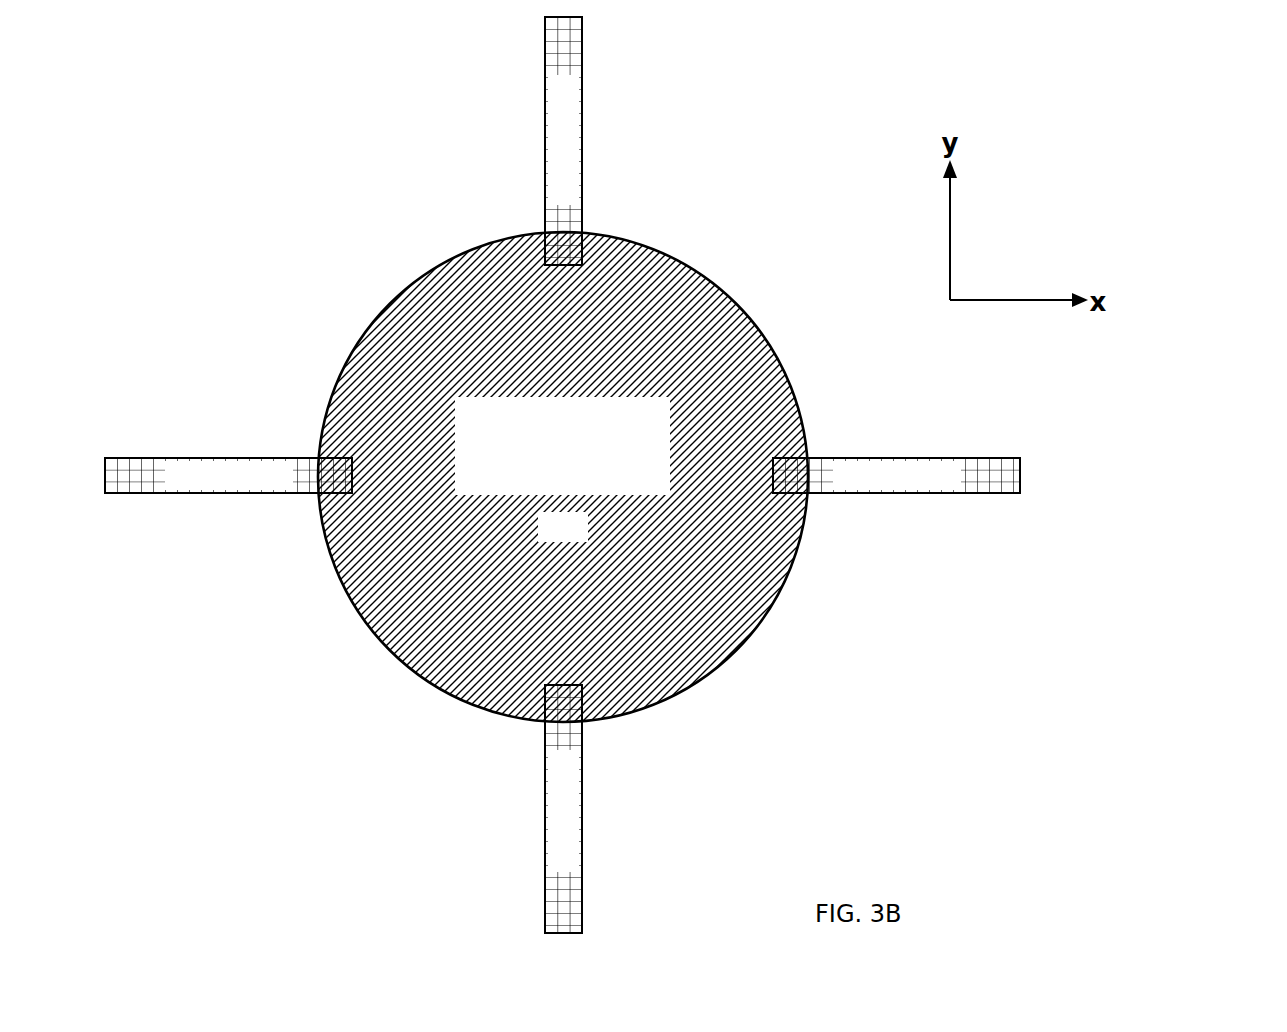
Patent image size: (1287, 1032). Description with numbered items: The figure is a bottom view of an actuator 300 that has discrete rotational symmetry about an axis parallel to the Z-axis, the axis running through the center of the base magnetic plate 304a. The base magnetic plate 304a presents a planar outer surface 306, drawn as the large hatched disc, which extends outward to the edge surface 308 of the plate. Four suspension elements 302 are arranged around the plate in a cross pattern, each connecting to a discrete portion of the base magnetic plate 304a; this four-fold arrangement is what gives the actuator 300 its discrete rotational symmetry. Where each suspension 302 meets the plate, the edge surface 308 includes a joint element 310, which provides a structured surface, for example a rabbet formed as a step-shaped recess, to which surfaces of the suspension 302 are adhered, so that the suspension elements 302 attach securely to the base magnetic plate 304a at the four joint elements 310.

The actuator 300 is at (687, 475).
The suspension element 302 is at (582, 58).
The base magnetic plate 304a is at (563, 477).
The planar outer surface 306 is at (562, 446).
The edge surface 308 is at (746, 305).
The joint element 310 is at (545, 226).